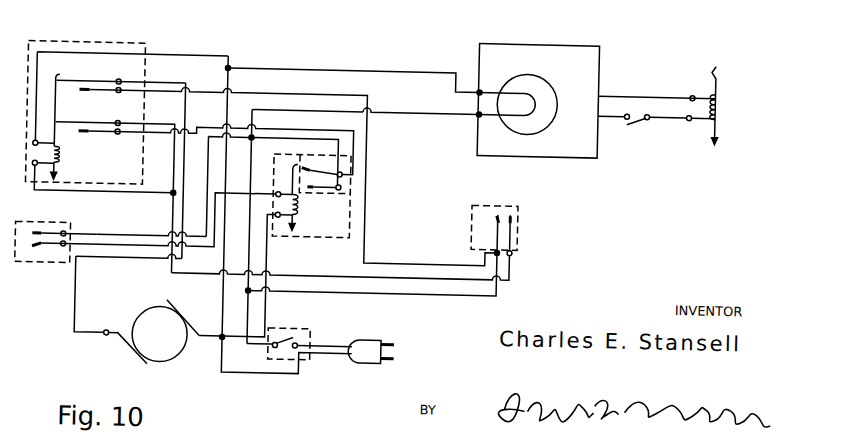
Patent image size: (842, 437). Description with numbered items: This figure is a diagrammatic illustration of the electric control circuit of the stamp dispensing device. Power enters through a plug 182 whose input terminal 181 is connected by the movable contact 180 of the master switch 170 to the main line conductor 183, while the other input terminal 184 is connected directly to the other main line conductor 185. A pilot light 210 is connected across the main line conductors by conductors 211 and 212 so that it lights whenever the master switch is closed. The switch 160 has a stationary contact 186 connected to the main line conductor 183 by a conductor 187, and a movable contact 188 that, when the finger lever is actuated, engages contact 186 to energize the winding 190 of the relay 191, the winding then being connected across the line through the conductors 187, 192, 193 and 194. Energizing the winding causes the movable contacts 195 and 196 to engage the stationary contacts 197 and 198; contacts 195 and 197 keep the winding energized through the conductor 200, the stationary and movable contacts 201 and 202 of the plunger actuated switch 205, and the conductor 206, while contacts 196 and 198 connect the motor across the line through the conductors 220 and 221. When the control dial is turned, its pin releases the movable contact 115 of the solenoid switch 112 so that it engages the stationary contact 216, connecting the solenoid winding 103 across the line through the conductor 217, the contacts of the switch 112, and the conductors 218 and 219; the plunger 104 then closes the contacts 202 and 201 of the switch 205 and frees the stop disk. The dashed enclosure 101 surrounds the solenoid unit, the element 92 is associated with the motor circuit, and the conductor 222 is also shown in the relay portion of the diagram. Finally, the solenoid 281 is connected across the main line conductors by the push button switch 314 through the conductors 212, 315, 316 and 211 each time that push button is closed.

The relay 191 is at (140, 47).
The conductor 194 is at (197, 56).
The movable contact 196 is at (60, 79).
The relay winding 190 is at (62, 166).
The conductor 193 is at (149, 188).
The stationary contact 198 is at (86, 92).
The conductor 222 is at (210, 76).
The movable contact 195 is at (64, 128).
The stationary contact 197 is at (94, 134).
The conductor 192 is at (160, 124).
The main line conductor 185 is at (228, 108).
The conductor 211 is at (419, 58).
The conductor 200 is at (273, 90).
The conductor 212 is at (413, 108).
The pilot light 210 is at (545, 78).
The conductor 206 is at (296, 136).
The plunger actuated switch 205 is at (314, 151).
The main line conductor 183 is at (256, 297).
The conductor 316 is at (640, 68).
The conductor 315 is at (600, 139).
The push button switch 314 is at (641, 117).
The solenoid 281 is at (722, 94).
The relay 101 is at (356, 204).
The solenoid winding 103 is at (299, 205).
The plunger 104 is at (298, 228).
The movable contact 202 is at (312, 168).
The stationary contact 201 is at (320, 184).
The solenoid switch 112 is at (42, 219).
The stationary contact 216 is at (44, 233).
The conductor 217 is at (129, 234).
The movable contact 115 is at (32, 251).
The conductor 218 is at (131, 260).
The conductor 221 is at (80, 299).
The cam switch 92 is at (165, 353).
The conductor 220 is at (205, 330).
The conductor 219 is at (273, 261).
The conductor 187 is at (441, 292).
The switch 160 is at (521, 241).
The stationary contact 186 is at (497, 214).
The movable contact 188 is at (517, 219).
The master switch 170 is at (315, 334).
The movable contact 180 is at (281, 351).
The plug 182 is at (355, 350).
The input terminal 181 is at (391, 341).
The input terminal 184 is at (390, 358).